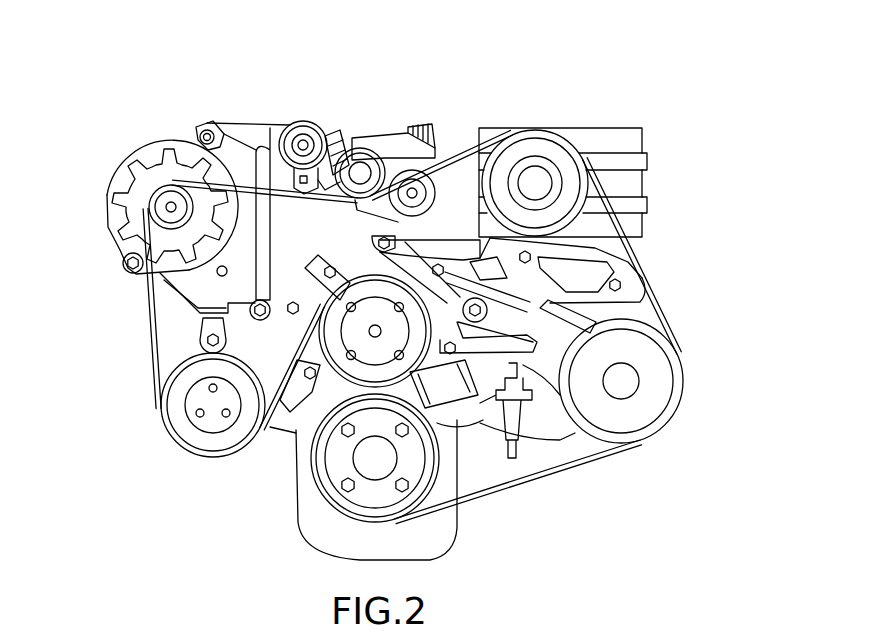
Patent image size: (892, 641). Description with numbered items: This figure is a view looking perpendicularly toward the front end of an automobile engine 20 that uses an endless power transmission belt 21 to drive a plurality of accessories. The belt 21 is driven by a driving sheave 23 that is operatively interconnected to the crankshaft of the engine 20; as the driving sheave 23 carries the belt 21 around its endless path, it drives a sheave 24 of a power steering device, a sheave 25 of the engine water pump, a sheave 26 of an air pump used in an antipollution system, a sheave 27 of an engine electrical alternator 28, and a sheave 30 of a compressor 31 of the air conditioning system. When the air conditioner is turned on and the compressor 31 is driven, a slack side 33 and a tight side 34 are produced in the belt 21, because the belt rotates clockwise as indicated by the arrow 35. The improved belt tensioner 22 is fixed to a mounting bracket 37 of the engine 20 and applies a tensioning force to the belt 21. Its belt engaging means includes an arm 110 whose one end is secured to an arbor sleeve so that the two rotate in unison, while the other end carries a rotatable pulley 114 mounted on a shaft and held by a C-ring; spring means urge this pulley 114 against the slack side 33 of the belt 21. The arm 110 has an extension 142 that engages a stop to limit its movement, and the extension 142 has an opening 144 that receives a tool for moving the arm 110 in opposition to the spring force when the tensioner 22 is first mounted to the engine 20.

The automobile engine 20 is at (668, 97).
The endless power transmission belt 21 is at (641, 275).
The belt tensioner 22 is at (349, 127).
The driving sheave 23 is at (322, 481).
The sheave of power steering device 24 is at (684, 381).
The sheave of engine water pump 25 is at (358, 265).
The sheave of air pump 26 is at (168, 437).
The sheave of engine electrical alternator 27 is at (148, 211).
The engine electrical alternator 28 is at (140, 148).
The sheave of compressor 30 is at (541, 128).
The compressor 31 is at (644, 185).
The slack side 33 is at (452, 155).
The tight side 34 is at (636, 255).
The arrow 35 is at (542, 494).
The mounting bracket 37 is at (258, 130).
The arm 110 is at (340, 130).
The rotatable pulley 114 is at (370, 148).
The extension 142 is at (322, 192).
The opening 144 is at (305, 190).